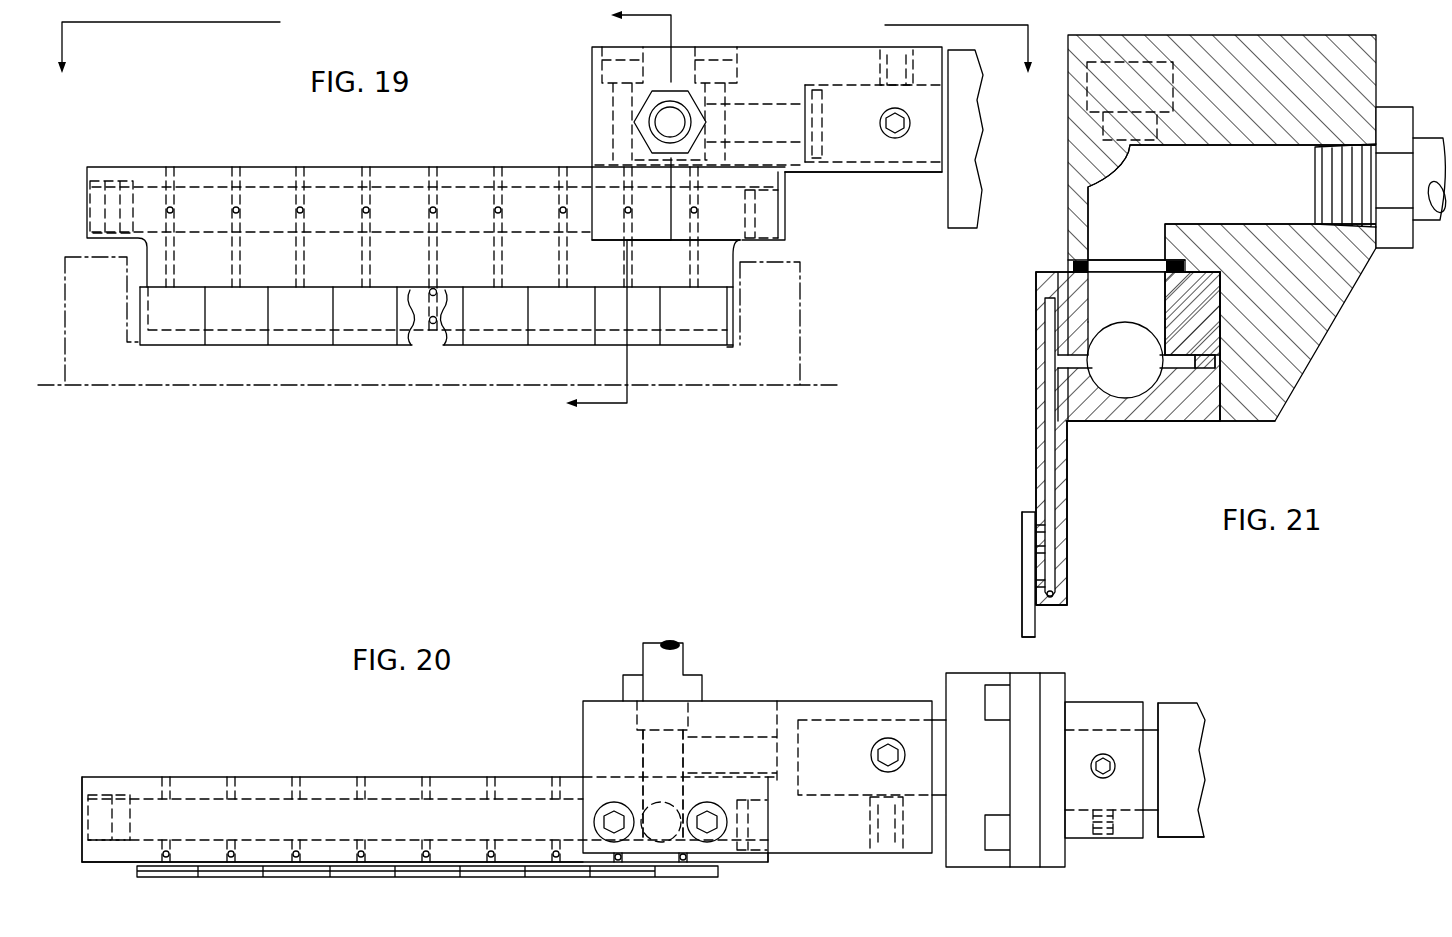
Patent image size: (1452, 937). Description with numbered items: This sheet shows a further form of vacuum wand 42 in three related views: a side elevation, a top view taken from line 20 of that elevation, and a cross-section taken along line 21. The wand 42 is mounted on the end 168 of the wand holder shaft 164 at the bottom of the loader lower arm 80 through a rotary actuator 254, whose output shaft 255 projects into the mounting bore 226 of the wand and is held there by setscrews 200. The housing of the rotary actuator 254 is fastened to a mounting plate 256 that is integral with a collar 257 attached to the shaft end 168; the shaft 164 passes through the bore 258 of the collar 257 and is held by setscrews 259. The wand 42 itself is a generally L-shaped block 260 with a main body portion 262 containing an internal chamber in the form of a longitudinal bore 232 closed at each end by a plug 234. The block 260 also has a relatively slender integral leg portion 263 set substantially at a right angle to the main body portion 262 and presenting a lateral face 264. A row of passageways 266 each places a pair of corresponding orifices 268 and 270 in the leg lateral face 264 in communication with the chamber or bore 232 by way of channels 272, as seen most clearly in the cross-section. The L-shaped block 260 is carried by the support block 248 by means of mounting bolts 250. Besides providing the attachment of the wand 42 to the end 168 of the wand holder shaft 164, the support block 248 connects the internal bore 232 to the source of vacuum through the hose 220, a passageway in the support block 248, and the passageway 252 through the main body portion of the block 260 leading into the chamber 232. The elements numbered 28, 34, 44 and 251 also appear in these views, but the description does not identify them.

In FIG. 19, the line 20— 20 is at (539, 62).
In FIG. 19, the line 21— 21 is at (606, 210).
In FIG. 19, the base frame 28 is at (802, 352).
In FIG. 19, the support plate 34 is at (357, 345).
In FIG. 21, the support plate 34 is at (1028, 622).
In FIG. 20, the support plate 34 is at (186, 878).
In FIG. 19, the wand 42 is at (197, 154).
In FIG. 21, the wand 42 is at (1280, 418).
In FIG. 20, the wand 42 is at (240, 762).
In FIG. 20, the frame member 44 is at (1175, 842).
In FIG. 20, the loader lower arm 80 is at (1198, 840).
In FIG. 20, the wand holder shaft 164 is at (1152, 704).
In FIG. 20, the end of the wand holder shaft 168 is at (1125, 815).
In FIG. 19, the setscrews 200 is at (889, 140).
In FIG. 20, the setscrews 200 is at (871, 755).
In FIG. 21, the hose 220 is at (1436, 138).
In FIG. 20, the hose 220 is at (680, 650).
In FIG. 19, the mounting bore 226 is at (832, 170).
In FIG. 20, the mounting bore 226 is at (812, 797).
In FIG. 19, the longitudinal bore 232 is at (265, 197).
In FIG. 21, the longitudinal bore 232 is at (1127, 396).
In FIG. 20, the longitudinal bore 232 is at (315, 800).
In FIG. 19, the plug 234 is at (90, 215).
In FIG. 21, the plug 234 is at (1125, 336).
In FIG. 20, the plug 234 is at (100, 792).
In FIG. 19, the support block 248 is at (777, 62).
In FIG. 21, the support block 248 is at (1308, 336).
In FIG. 20, the support block 248 is at (728, 718).
In FIG. 20, the mounting bolts 250 is at (608, 843).
In FIG. 21, the cavity 251 is at (1098, 219).
In FIG. 20, the cavity 251 is at (652, 757).
In FIG. 21, the passageway 252 is at (1155, 320).
In FIG. 19, the rotary actuator 254 is at (966, 232).
In FIG. 21, the rotary actuator 254 is at (1068, 266).
In FIG. 20, the rotary actuator 254 is at (982, 655).
In FIG. 19, the output shaft 255 is at (857, 170).
In FIG. 20, the output shaft 255 is at (940, 720).
In FIG. 20, the mounting plate 256 is at (1052, 868).
In FIG. 20, the collar 257 is at (1080, 702).
In FIG. 20, the bore 258 is at (1106, 725).
In FIG. 20, the setscrews 259 is at (1106, 778).
In FIG. 19, the L-shaped block 260 is at (424, 138).
In FIG. 21, the L-shaped block 260 is at (1215, 432).
In FIG. 20, the L-shaped block 260 is at (394, 775).
In FIG. 19, the main body portion 262 is at (463, 175).
In FIG. 21, the main body portion 262 is at (1070, 506).
In FIG. 20, the main body portion 262 is at (455, 786).
In FIG. 19, the leg portion 263 is at (716, 272).
In FIG. 21, the leg portion 263 is at (1208, 304).
In FIG. 20, the leg portion 263 is at (725, 868).
In FIG. 21, the lateral face 264 is at (1040, 548).
In FIG. 19, the passageways 266 is at (373, 256).
In FIG. 21, the passageways 266 is at (1054, 557).
In FIG. 19, the orifice 268 is at (436, 290).
In FIG. 21, the orifice 268 is at (1038, 527).
In FIG. 19, the orifice 270 is at (433, 327).
In FIG. 21, the orifice 270 is at (1045, 582).
In FIG. 19, the channels 272 is at (432, 214).
In FIG. 21, the channels 272 is at (1060, 366).